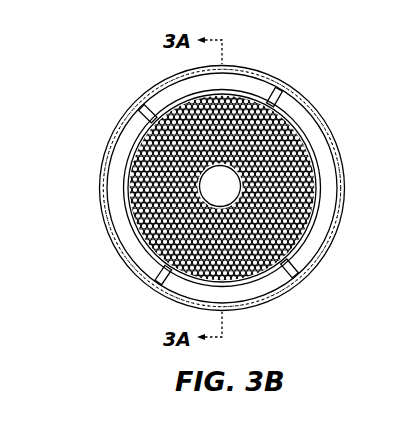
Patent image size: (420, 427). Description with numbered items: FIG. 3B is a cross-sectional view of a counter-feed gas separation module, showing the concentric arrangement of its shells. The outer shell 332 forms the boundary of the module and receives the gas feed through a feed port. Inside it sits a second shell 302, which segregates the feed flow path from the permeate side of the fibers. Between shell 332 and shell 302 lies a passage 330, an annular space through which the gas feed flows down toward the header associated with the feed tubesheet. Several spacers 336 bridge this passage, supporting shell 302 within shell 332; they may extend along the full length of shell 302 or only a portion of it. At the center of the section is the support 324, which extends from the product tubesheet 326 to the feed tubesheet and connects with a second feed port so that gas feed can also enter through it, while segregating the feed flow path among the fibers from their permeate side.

The shell 302 is at (298, 118).
The support 324 is at (207, 188).
The product tubesheet 326 is at (323, 197).
The passage 330 is at (129, 140).
The shell 332 is at (248, 70).
The spacers 336 is at (150, 104).